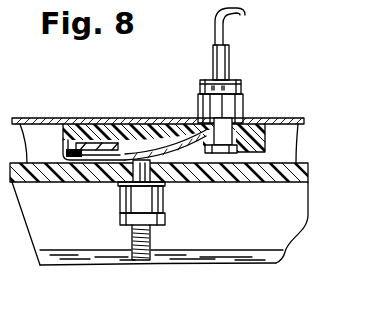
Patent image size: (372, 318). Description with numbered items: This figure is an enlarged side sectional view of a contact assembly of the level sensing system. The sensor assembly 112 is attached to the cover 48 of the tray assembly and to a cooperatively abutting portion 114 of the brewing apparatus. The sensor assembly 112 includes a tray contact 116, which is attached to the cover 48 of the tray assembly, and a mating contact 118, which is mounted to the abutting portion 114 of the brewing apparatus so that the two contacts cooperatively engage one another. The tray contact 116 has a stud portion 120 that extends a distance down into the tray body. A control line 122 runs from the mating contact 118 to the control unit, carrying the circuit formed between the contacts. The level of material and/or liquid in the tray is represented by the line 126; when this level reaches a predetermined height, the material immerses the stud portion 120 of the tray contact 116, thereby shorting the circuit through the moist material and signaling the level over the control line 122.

The cover 48 is at (308, 163).
The sensor assembly 112 is at (298, 87).
The cooperatively abutting portion of the brewing apparatus 114 is at (276, 118).
The tray contact 116 is at (171, 200).
The mating contact 118 is at (62, 158).
The stud portion 120 is at (128, 237).
The control line 122 is at (214, 20).
The line representing level of material and/or liquid 126 is at (266, 247).